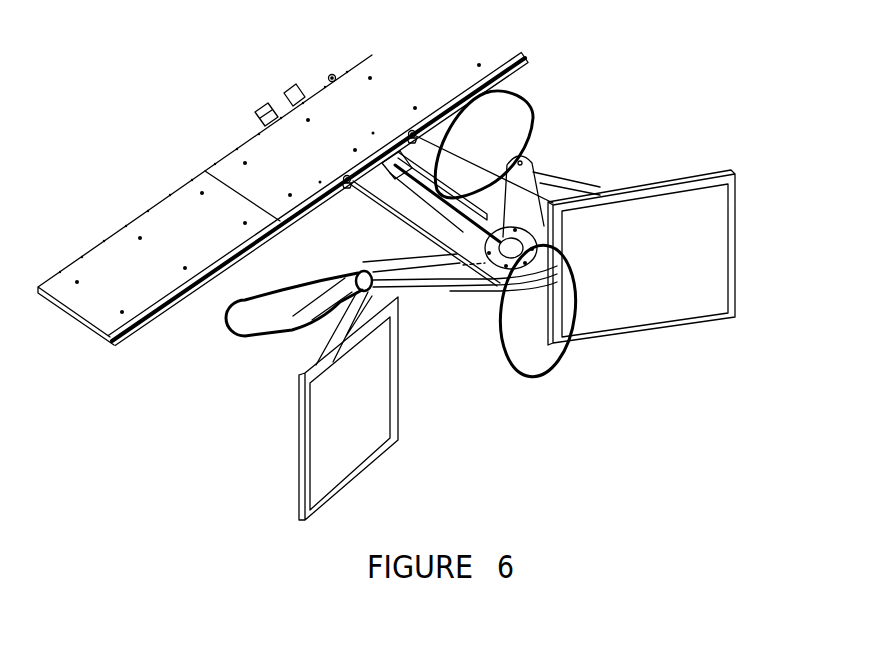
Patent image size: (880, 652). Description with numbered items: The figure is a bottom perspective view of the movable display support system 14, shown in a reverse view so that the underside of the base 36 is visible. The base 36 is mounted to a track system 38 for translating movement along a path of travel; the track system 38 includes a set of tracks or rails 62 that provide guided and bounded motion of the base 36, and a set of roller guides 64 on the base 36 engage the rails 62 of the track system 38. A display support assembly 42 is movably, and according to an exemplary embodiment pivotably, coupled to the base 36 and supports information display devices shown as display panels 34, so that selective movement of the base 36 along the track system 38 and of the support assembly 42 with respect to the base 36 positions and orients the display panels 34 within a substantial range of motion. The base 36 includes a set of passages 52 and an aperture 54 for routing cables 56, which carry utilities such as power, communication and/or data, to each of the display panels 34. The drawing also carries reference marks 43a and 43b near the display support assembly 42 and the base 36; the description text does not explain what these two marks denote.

The movable display support system 14 is at (556, 424).
The display panel 34 is at (665, 288).
The base 36 is at (322, 279).
The track system 38 is at (72, 323).
The display support assembly 42 is at (482, 303).
The loop 43a is at (542, 272).
The loop 43b is at (295, 315).
The passages 52 is at (444, 185).
The aperture 54 is at (385, 208).
The cables 56 is at (427, 200).
The rails 62 is at (143, 327).
The roller guides 64 is at (266, 118).